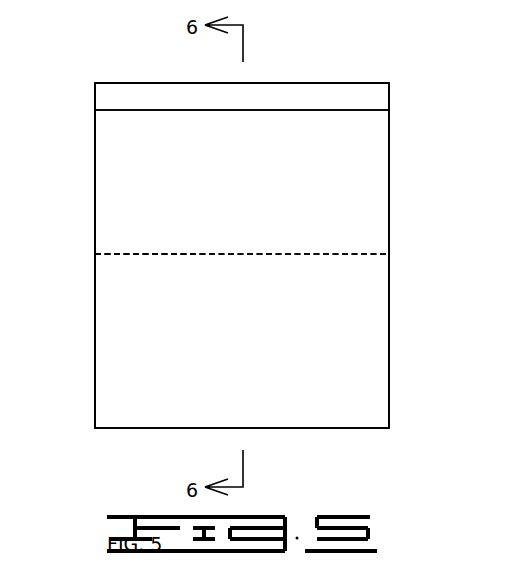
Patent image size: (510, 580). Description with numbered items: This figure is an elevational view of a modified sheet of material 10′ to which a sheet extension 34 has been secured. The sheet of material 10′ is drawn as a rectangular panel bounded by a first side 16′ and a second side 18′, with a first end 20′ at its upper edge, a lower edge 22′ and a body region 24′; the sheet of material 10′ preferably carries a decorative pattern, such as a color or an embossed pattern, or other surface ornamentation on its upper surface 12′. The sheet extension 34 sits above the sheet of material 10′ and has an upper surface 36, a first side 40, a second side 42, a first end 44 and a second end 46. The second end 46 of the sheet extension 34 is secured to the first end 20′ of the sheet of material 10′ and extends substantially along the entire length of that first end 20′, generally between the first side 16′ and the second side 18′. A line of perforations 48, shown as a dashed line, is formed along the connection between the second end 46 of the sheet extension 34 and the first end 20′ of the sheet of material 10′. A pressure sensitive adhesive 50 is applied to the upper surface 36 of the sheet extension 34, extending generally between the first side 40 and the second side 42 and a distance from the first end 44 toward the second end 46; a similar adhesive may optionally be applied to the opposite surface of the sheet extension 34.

The sheet of material 10′ is at (426, 340).
The upper surface 12′ is at (370, 390).
The first side 16′ is at (95, 373).
The second side 18′ is at (390, 288).
The first end 20′ is at (353, 253).
The bottom surface 22′ is at (298, 428).
The lower layer body 24′ is at (172, 405).
The sheet extension 34 is at (397, 178).
The upper surface 36 is at (110, 142).
The first side 40 is at (95, 177).
The second side 42 is at (390, 137).
The first end 44 is at (290, 83).
The second end 46 is at (127, 255).
The line of perforations 48 is at (259, 247).
The pressure sensitive adhesive 50 is at (350, 93).